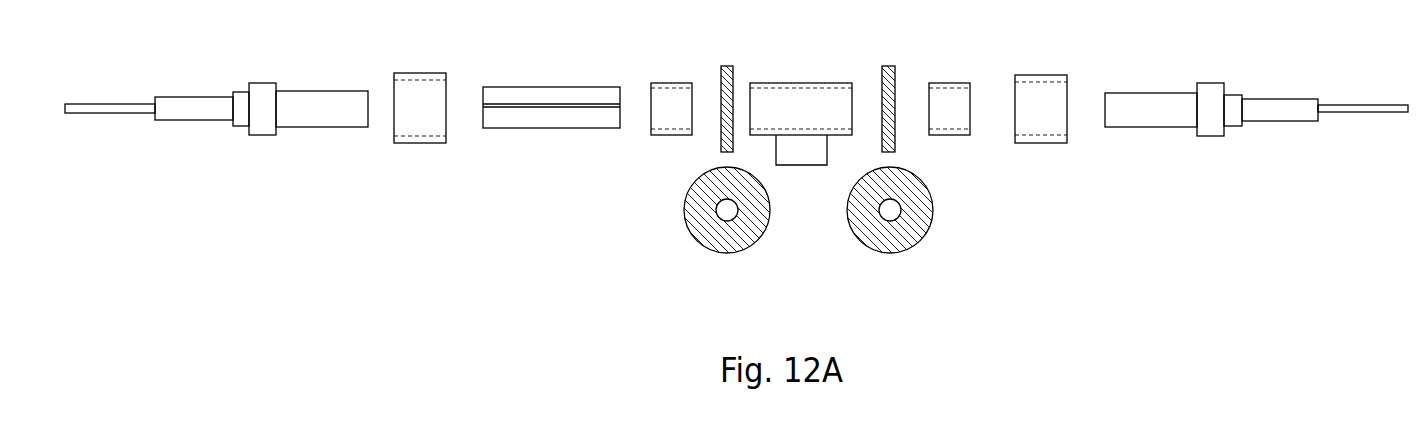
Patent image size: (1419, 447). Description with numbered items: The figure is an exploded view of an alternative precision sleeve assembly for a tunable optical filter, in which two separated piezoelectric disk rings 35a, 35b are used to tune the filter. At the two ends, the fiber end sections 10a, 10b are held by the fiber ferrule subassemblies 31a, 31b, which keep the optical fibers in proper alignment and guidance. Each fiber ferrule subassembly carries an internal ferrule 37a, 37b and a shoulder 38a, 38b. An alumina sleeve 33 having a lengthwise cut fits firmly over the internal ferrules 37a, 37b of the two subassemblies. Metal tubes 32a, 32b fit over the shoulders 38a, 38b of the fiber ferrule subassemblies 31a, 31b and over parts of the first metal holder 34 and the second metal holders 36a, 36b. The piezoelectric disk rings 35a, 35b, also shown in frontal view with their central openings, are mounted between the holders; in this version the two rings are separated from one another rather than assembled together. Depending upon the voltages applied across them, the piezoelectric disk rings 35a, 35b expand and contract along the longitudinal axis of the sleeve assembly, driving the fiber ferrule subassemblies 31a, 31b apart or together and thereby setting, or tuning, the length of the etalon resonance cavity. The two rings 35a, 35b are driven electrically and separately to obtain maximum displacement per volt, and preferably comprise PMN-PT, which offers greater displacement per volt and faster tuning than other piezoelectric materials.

The fiber end section 10a is at (127, 141).
The fiber end section 10b is at (1347, 108).
The fiber ferrule subassembly 31a is at (215, 74).
The fiber ferrule subassembly 31b is at (1251, 73).
The metal tube 32a is at (407, 133).
The metal tube 32b is at (1040, 134).
The alumina sleeve 33 is at (560, 98).
The first metal holder 34 is at (801, 99).
The piezoelectric disk ring 35a is at (727, 133).
The piezoelectric disk ring 35b is at (893, 143).
The second metal holder 36a is at (660, 97).
The second metal holder 36b is at (952, 92).
The internal ferrule 37a is at (312, 100).
The internal ferrule 37b is at (1130, 100).
The shoulder 38a is at (260, 125).
The shoulder 38b is at (1220, 125).